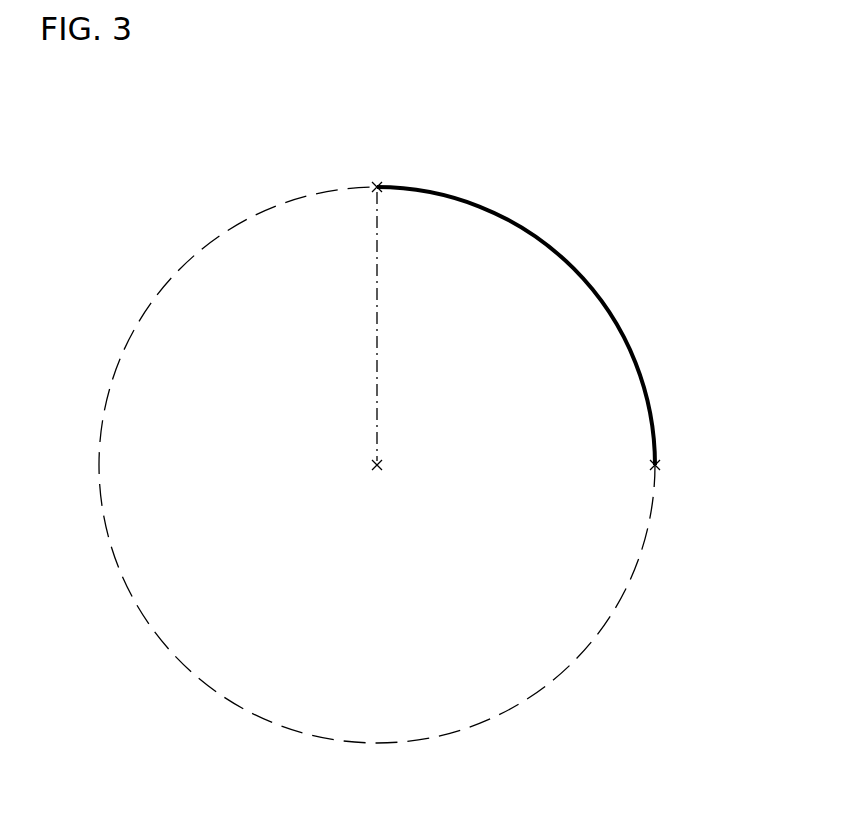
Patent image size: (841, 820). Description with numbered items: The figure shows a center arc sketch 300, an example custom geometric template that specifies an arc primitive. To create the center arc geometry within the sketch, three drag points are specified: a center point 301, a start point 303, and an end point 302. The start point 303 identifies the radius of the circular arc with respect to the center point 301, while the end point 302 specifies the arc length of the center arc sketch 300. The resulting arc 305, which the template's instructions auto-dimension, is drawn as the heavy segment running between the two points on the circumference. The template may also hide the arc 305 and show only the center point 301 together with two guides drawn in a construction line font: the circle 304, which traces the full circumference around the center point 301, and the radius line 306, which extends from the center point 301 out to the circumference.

The center arc sketch 300 is at (424, 646).
The center point 301 is at (369, 460).
The end point 302 is at (389, 178).
The start point 303 is at (673, 450).
The circle 304 is at (242, 212).
The arc 305 is at (560, 239).
The radius line 306 is at (371, 371).